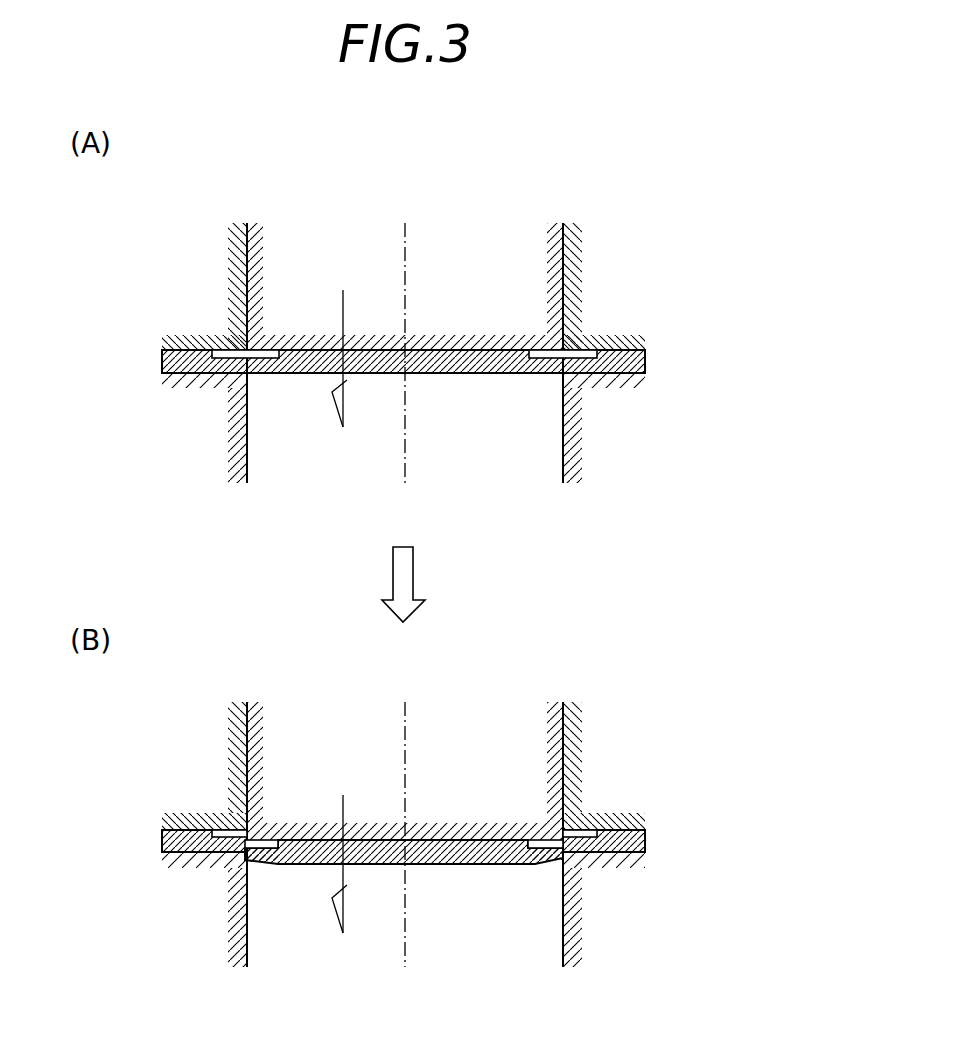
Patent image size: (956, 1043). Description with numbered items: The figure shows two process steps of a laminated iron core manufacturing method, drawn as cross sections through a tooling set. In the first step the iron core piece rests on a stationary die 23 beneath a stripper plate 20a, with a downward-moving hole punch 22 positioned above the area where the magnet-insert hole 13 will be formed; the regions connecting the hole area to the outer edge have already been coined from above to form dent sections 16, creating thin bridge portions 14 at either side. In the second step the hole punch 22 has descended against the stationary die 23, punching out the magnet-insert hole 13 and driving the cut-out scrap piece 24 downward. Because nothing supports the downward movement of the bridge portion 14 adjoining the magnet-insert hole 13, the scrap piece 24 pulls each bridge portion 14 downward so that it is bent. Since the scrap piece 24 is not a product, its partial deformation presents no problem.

The magnet-insert hole 13 is at (460, 322).
The bridge portion 14 is at (270, 374).
The dent section 16 is at (280, 349).
The stripper plate 20a is at (210, 263).
The hole punch 22 is at (527, 263).
The stationary die 23 is at (608, 455).
The scrap piece 24 is at (453, 381).